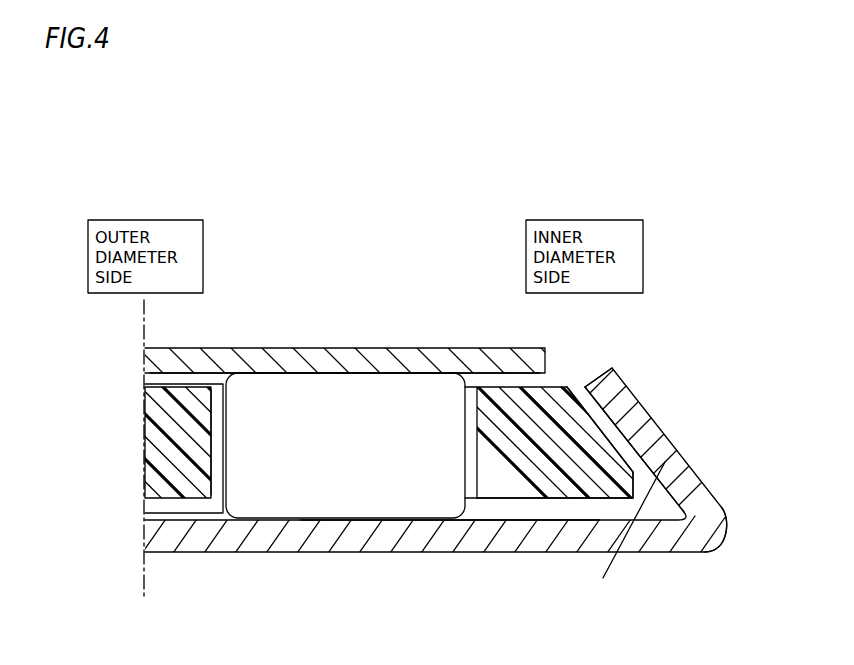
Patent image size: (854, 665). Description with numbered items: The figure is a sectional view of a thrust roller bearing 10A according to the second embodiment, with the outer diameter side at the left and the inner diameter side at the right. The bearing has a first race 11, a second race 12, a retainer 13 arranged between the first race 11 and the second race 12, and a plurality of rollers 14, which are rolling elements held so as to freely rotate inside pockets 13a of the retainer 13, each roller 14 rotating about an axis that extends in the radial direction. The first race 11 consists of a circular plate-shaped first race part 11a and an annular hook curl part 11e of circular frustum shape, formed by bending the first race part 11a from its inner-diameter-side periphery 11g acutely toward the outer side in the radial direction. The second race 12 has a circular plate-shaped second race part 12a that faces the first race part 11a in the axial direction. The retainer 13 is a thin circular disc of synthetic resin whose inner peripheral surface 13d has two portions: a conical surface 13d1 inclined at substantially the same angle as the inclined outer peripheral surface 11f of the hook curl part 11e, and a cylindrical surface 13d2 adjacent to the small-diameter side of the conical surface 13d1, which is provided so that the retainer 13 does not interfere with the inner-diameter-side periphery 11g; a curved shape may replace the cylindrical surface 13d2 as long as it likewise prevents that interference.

The thrust roller bearing 10A is at (613, 177).
The first race 11 is at (346, 562).
The first race part 11a is at (477, 540).
The hook curl part 11e is at (656, 476).
The outer peripheral surface 11f is at (602, 414).
The inner-diameter-side periphery 11g is at (717, 532).
The second race 12 is at (424, 339).
The second race part 12a is at (288, 360).
The retainer 13 is at (198, 375).
The pockets 13a is at (212, 443).
The inner peripheral surface 13d is at (718, 355).
The conical surface 13d1 is at (610, 437).
The cylindrical surface 13d2 is at (645, 512).
The rollers 14 is at (358, 412).